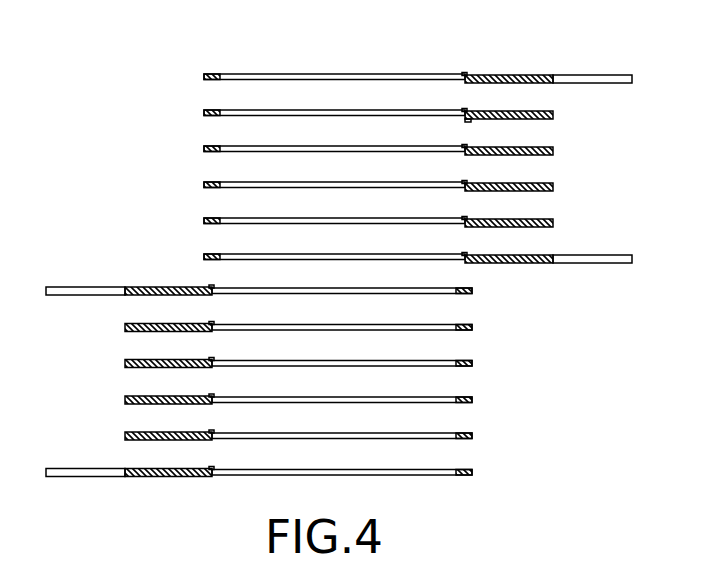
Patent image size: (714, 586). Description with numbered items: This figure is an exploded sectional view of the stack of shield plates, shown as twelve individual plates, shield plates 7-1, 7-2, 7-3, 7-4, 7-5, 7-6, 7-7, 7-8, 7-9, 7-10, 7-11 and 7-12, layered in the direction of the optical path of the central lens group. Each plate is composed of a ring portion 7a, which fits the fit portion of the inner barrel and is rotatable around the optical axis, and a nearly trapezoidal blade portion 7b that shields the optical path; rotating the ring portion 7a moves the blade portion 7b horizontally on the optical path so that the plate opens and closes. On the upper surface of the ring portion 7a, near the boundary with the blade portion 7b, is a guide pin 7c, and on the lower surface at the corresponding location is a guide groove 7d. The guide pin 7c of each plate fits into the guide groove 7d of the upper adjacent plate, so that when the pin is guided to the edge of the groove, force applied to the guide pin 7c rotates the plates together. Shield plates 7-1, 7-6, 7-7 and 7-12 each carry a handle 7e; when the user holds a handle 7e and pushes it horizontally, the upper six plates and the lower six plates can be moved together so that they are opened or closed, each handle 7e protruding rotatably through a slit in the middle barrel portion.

The shield plate 7-1 is at (330, 52).
The shield plate 7-2 is at (365, 122).
The shield plate 7-3 is at (190, 149).
The shield plate 7-4 is at (190, 185).
The shield plate 7-5 is at (190, 221).
The shield plate 7-6 is at (190, 257).
The shield plate 7-7 is at (488, 291).
The shield plate 7-8 is at (488, 328).
The shield plate 7-9 is at (488, 364).
The shield plate 7-10 is at (488, 400).
The shield plate 7-11 is at (488, 436).
The shield plate 7-12 is at (488, 472).
The ring portion 7a is at (213, 73).
The blade portion 7b is at (505, 74).
The guide pin 7c is at (466, 110).
The guide groove 7d is at (470, 120).
The handle 7e is at (590, 74).